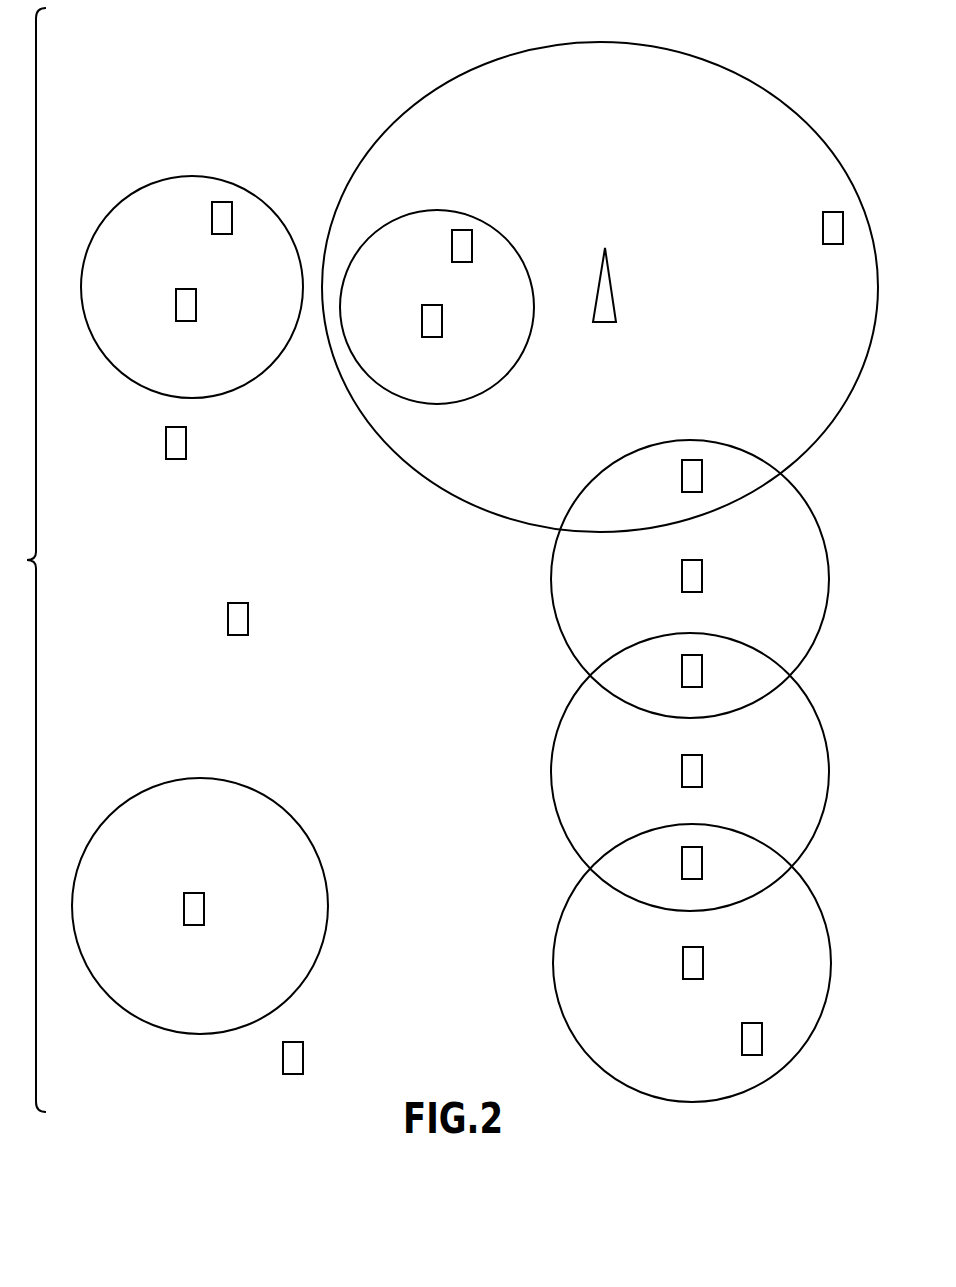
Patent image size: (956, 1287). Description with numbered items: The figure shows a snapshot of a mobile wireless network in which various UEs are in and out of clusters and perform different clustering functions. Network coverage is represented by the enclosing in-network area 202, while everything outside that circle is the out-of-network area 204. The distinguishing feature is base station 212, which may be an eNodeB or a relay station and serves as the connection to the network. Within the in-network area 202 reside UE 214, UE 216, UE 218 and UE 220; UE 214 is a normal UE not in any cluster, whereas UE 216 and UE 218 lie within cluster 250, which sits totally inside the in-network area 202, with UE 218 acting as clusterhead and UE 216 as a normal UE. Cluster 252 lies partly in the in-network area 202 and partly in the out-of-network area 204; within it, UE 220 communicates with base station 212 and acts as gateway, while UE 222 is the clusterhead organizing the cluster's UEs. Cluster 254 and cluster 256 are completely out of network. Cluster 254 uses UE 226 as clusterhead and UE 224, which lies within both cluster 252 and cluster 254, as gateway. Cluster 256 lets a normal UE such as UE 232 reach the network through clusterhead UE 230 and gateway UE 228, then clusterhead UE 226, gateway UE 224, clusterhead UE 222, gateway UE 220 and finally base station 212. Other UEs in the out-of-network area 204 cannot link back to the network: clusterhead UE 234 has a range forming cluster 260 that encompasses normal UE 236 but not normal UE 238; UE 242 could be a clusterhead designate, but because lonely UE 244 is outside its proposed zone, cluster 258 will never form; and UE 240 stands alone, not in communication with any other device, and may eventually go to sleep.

The in-network area 202 is at (424, 98).
The out-of-network area 204 is at (106, 27).
The base station 212 is at (599, 283).
The UE 214 is at (823, 226).
The UE 216 is at (452, 244).
The UE 218 is at (422, 318).
The UE 220 is at (682, 473).
The UE 222 is at (682, 574).
The UE 224 is at (682, 668).
The UE 226 is at (682, 768).
The UE 228 is at (682, 860).
The UE 230 is at (683, 960).
The UE 232 is at (742, 1037).
The UE 234 is at (176, 302).
The UE 236 is at (212, 215).
The UE 238 is at (166, 440).
The UE 240 is at (248, 613).
The UE 242 is at (184, 906).
The UE 244 is at (303, 1050).
The cluster 250 is at (480, 221).
The cluster 252 is at (609, 466).
The cluster 254 is at (565, 712).
The cluster 256 is at (565, 905).
The cluster 258 is at (129, 799).
The cluster 260 is at (130, 193).